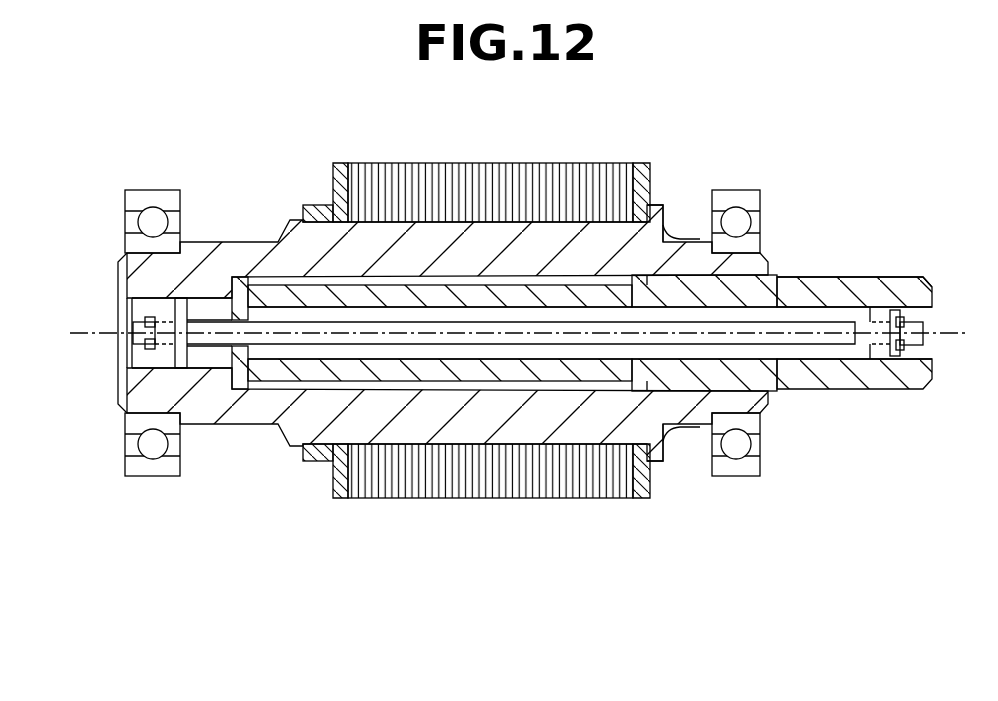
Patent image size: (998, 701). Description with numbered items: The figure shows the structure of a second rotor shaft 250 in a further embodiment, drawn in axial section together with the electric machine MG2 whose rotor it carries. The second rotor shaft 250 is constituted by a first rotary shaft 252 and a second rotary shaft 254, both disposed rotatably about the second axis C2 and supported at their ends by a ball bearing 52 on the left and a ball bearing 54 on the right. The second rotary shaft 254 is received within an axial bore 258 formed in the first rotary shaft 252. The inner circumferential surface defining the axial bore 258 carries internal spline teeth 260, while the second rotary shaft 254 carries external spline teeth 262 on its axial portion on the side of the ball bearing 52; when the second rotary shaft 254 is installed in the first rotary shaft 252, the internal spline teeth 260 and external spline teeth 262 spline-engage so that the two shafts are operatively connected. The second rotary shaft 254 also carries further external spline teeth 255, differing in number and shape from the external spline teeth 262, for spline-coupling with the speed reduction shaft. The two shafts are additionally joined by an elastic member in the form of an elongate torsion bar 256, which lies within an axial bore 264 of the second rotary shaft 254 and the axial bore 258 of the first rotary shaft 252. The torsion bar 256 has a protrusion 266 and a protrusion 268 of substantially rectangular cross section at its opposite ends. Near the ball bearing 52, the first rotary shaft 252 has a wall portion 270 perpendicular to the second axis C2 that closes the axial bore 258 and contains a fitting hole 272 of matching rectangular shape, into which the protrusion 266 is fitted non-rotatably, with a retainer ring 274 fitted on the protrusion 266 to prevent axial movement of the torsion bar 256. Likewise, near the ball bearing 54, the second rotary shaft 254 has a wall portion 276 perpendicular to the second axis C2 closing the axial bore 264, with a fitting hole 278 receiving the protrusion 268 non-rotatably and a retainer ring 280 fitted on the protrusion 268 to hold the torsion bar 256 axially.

The ball bearing 52 is at (155, 220).
The ball bearing 54 is at (737, 220).
The second rotor shaft 250 is at (820, 190).
The first rotary shaft 252 is at (260, 234).
The second rotary shaft 254 is at (848, 248).
The external spline teeth 255 is at (807, 277).
The torsion bar 256 is at (602, 340).
The axial bore 258 is at (700, 380).
The internal spline teeth 260 is at (408, 280).
The external spline teeth 262 is at (320, 461).
The axial bore 264 is at (402, 351).
The protrusion 266 is at (136, 324).
The protrusion 268 is at (923, 328).
The wall portion 270 is at (172, 307).
The fitting hole 272 is at (193, 363).
The retainer ring 274 is at (126, 356).
The wall portion 276 is at (872, 338).
The fitting hole 278 is at (862, 343).
The retainer ring 280 is at (900, 316).
The second motor generator MG2 is at (488, 150).
The second axis C2 is at (947, 343).